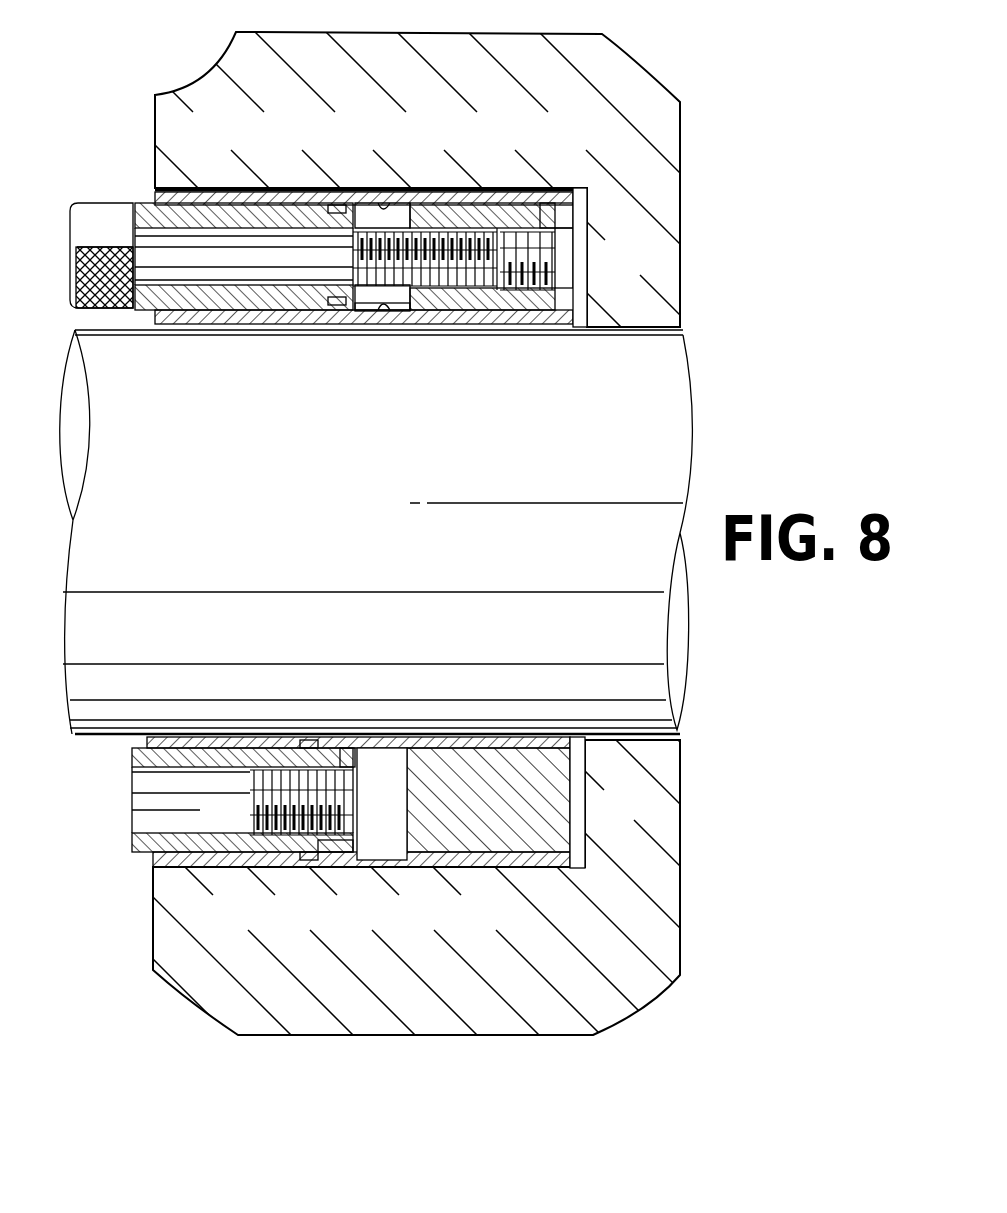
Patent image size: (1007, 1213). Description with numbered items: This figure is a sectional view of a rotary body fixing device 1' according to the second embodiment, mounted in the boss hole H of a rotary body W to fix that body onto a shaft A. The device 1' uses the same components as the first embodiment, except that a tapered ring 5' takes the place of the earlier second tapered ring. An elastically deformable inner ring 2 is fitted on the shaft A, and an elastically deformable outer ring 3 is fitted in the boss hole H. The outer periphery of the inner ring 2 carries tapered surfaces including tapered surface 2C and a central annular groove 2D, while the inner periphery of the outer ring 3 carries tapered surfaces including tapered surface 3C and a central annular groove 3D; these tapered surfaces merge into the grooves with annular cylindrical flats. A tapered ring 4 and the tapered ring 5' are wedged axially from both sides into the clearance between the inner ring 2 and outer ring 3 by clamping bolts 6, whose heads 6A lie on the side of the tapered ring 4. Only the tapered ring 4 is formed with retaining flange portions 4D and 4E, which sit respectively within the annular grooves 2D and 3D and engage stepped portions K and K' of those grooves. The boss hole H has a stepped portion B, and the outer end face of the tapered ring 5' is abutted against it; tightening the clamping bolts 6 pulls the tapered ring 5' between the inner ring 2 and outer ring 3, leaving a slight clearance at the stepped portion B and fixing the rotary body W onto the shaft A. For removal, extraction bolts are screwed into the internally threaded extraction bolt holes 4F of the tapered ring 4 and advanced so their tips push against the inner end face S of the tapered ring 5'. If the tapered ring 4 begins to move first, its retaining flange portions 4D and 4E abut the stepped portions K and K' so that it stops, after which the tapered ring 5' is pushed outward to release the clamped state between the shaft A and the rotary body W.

The rotary body fixing device 1' is at (202, 198).
The inner ring 2 is at (253, 318).
The tapered surface 2C is at (483, 297).
The annular groove 2D is at (390, 310).
The outer ring 3 is at (283, 200).
The tapered surface 3C is at (533, 210).
The annular groove 3D is at (402, 213).
The tapered ring 4 is at (232, 215).
The retaining flange portion 4D is at (340, 312).
The retaining flange portion 4E is at (352, 213).
The extraction bolt holes 4F is at (200, 812).
The tapered ring 5' is at (526, 489).
The clamping bolts 6 is at (150, 245).
The bolt heads 6A is at (92, 238).
The shaft A is at (643, 412).
The stepped portion B is at (588, 258).
The boss hole H is at (495, 192).
The stepped portion K is at (304, 522).
The stepped portion K' is at (302, 527).
The inner end face S is at (400, 835).
The rotary body W is at (688, 252).